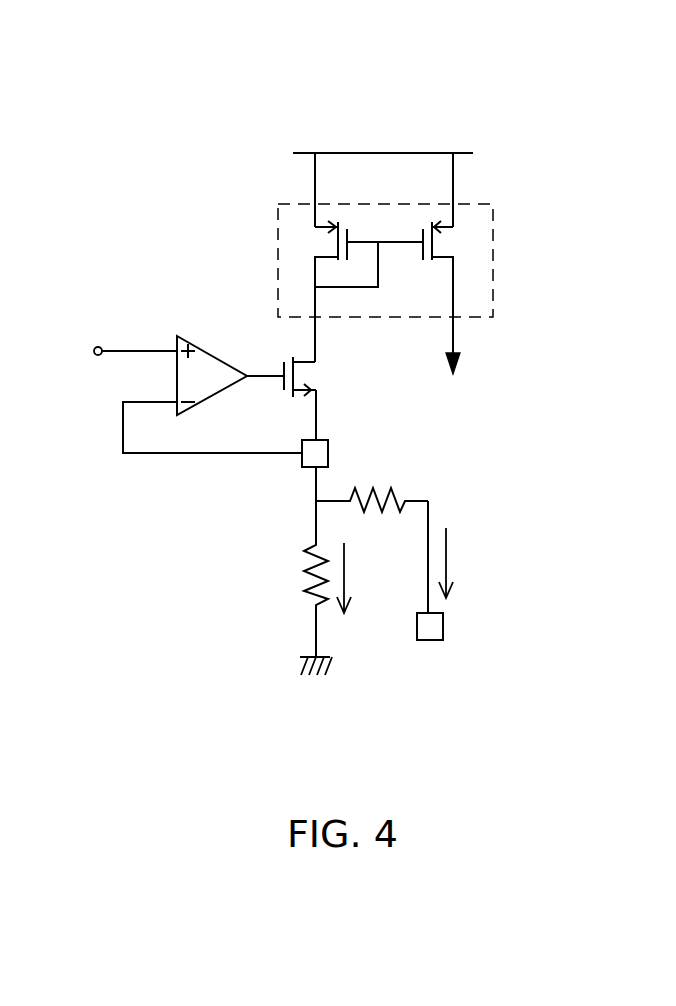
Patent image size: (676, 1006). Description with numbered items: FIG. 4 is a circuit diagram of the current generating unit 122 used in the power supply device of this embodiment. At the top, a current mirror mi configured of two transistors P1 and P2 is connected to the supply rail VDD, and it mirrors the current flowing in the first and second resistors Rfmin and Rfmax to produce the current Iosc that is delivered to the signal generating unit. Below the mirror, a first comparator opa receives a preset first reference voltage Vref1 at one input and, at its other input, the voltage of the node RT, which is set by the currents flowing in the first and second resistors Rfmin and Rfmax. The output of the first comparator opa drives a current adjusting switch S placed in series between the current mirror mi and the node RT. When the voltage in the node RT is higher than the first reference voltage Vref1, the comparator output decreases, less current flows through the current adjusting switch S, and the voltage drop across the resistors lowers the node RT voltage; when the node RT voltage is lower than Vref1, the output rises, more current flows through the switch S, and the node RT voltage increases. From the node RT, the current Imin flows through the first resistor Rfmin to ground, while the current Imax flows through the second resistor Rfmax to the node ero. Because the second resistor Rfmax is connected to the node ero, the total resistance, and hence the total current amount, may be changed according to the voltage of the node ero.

The current generating unit 122 is at (568, 49).
The supply voltage VDD is at (383, 135).
The current mirror mi is at (497, 247).
The transistor P1 is at (317, 269).
The transistor P2 is at (453, 269).
The current Iosc is at (479, 346).
The first reference voltage Vref1 is at (101, 352).
The first comparator opa is at (208, 360).
The current adjusting switch S is at (293, 363).
The node RT is at (334, 452).
The second resistor Rfmax is at (372, 512).
The first resistor Rfmin is at (286, 588).
The current Imin is at (365, 578).
The current Imax is at (469, 563).
The node ero is at (429, 585).